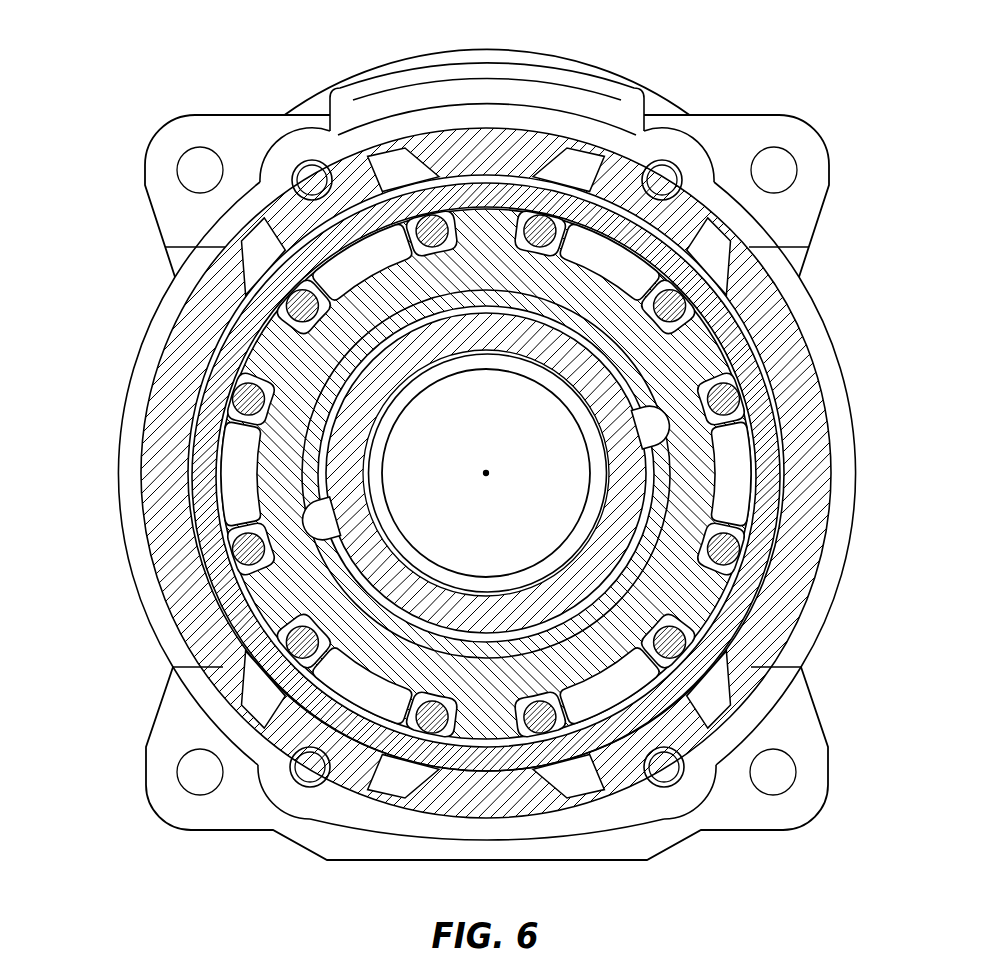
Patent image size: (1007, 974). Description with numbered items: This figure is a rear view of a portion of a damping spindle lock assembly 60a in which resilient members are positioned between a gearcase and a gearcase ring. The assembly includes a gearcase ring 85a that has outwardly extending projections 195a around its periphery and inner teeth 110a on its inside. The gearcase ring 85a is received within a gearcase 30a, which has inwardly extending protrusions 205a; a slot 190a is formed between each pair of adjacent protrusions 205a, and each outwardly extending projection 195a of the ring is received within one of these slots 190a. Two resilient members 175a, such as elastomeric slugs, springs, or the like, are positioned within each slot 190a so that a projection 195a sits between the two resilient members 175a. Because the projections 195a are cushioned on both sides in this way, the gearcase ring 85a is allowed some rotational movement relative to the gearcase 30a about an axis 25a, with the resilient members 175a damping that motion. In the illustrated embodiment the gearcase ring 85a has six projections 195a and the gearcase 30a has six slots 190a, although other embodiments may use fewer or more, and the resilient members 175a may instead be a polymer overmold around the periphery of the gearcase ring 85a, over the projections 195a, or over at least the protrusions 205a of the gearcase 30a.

The axis 25a is at (489, 476).
The gearcase 30a is at (567, 72).
The damping spindle lock assembly 60a is at (800, 412).
The gearcase ring 85a is at (685, 508).
The inner teeth 110a is at (262, 437).
The resilient members 175a is at (255, 255).
The slot 190a is at (740, 327).
The outwardly extending projections 195a is at (690, 316).
The inwardly extending protrusions 205a is at (376, 262).